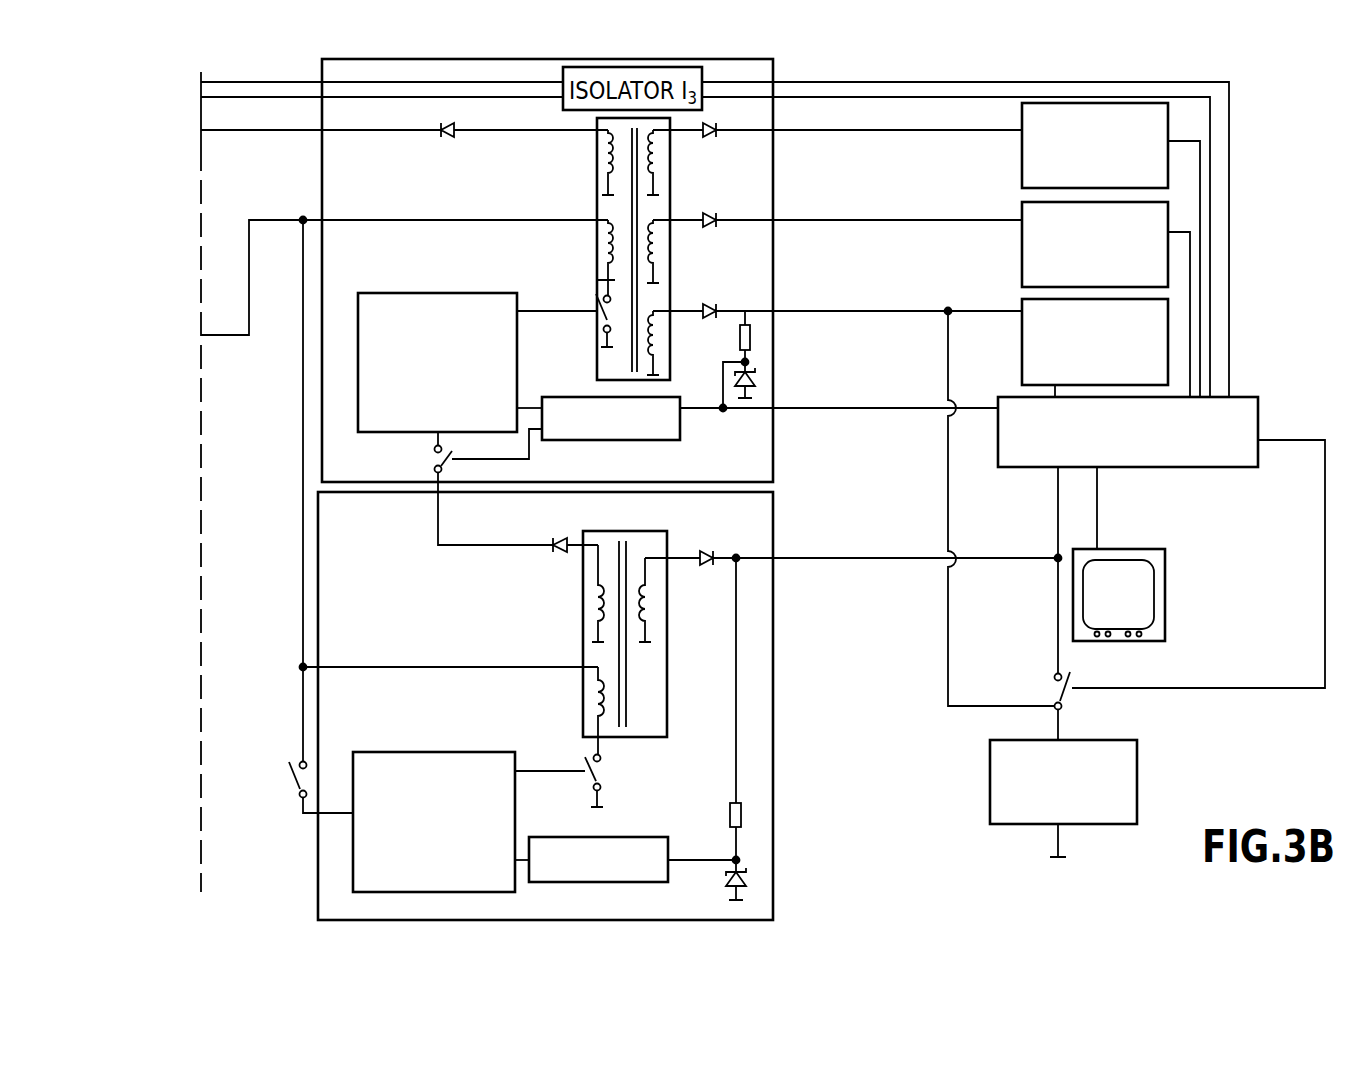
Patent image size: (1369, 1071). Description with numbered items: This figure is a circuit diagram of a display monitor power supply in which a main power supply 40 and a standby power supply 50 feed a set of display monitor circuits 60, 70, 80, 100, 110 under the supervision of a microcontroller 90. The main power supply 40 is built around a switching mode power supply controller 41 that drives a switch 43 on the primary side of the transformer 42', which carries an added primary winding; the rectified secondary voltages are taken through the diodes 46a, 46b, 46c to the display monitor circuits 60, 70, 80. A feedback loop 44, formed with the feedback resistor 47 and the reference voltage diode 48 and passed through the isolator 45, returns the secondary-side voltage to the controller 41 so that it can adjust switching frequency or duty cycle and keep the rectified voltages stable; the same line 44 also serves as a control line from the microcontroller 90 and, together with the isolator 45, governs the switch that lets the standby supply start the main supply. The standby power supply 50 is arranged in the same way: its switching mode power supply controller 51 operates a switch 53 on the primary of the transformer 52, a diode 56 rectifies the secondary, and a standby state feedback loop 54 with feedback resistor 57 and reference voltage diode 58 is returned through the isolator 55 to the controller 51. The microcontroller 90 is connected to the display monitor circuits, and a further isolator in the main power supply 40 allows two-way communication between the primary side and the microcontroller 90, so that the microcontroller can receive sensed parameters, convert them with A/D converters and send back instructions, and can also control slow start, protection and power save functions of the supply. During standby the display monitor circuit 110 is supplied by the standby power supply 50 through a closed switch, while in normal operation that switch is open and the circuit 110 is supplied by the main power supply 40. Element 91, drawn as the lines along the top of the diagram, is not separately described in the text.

The main power supply 40 is at (776, 63).
The switching mode power supply controller 41 is at (460, 293).
The transformer 42' is at (575, 166).
The switch 43 is at (601, 320).
The feedback loop 44 is at (700, 411).
The isolator 45 is at (628, 440).
The diode 46a is at (709, 140).
The diode 46b is at (709, 230).
The diode 46c is at (702, 305).
The feedback resistor 47 is at (751, 342).
The reference voltage diode 48 is at (740, 386).
The standby power supply 50 is at (775, 867).
The switching mode power supply controller 51 is at (458, 752).
The transformer 52 is at (617, 531).
The switch 53 is at (597, 775).
The standby state feedback loop 54 is at (680, 860).
The isolator 55 is at (590, 882).
The diode 56 is at (709, 570).
The feedback resistor 57 is at (742, 815).
The reference voltage diode 58 is at (726, 874).
The display monitor circuit 60 is at (1022, 151).
The display monitor circuit 70 is at (1022, 262).
The display monitor circuit 80 is at (1022, 350).
The microcontroller 90 is at (1172, 467).
The bus lines 91 is at (1185, 98).
The display monitor circuit 100 is at (1130, 592).
The display monitor circuit 110 is at (1137, 772).